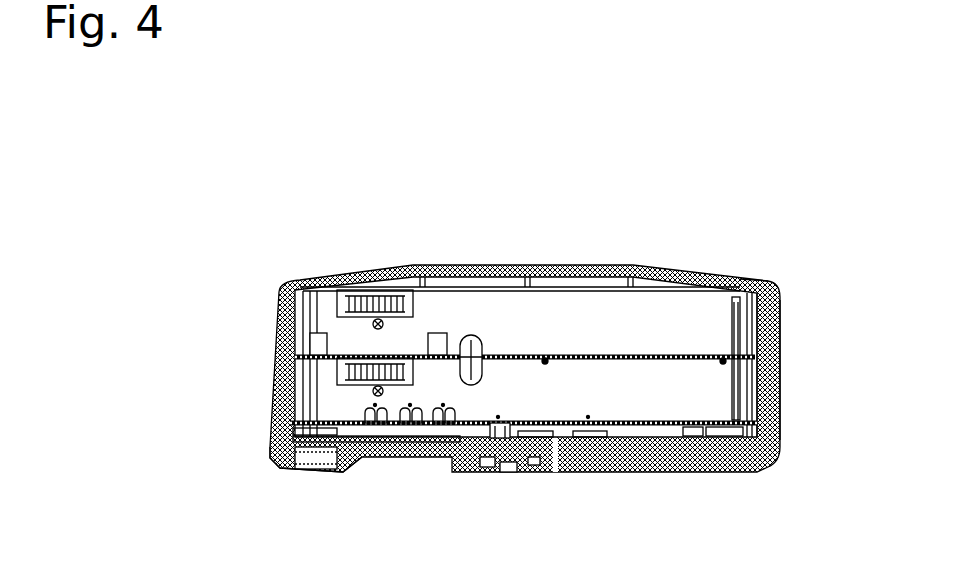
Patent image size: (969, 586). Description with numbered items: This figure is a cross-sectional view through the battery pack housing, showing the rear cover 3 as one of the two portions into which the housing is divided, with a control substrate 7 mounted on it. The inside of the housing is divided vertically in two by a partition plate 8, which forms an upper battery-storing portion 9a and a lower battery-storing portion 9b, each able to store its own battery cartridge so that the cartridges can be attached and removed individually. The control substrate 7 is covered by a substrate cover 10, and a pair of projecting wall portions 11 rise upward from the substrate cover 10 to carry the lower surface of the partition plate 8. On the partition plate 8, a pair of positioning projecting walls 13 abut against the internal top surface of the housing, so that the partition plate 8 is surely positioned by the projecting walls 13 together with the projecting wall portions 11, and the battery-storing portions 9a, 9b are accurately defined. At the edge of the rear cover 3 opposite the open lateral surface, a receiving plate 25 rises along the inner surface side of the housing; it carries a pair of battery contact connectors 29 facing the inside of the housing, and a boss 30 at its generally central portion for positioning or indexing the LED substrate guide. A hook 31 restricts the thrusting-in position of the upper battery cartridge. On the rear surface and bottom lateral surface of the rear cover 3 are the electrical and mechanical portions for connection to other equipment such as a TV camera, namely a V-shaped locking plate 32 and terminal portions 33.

The rear cover 3 is at (708, 473).
The control substrate 7 is at (398, 453).
The partition plate 8 is at (680, 356).
The battery-storing portion 9a is at (585, 333).
The battery-storing portion 9b is at (627, 405).
The substrate cover 10 is at (703, 420).
The projecting wall portions 11 is at (782, 410).
The positioning projecting walls 13 is at (778, 303).
The receiving plate 25 is at (533, 302).
The battery contact connectors 29 is at (337, 310).
The boss 30 is at (471, 335).
The hook 31 is at (435, 333).
The V-shaped locking plate 32 is at (463, 475).
The terminal portions 33 is at (280, 468).